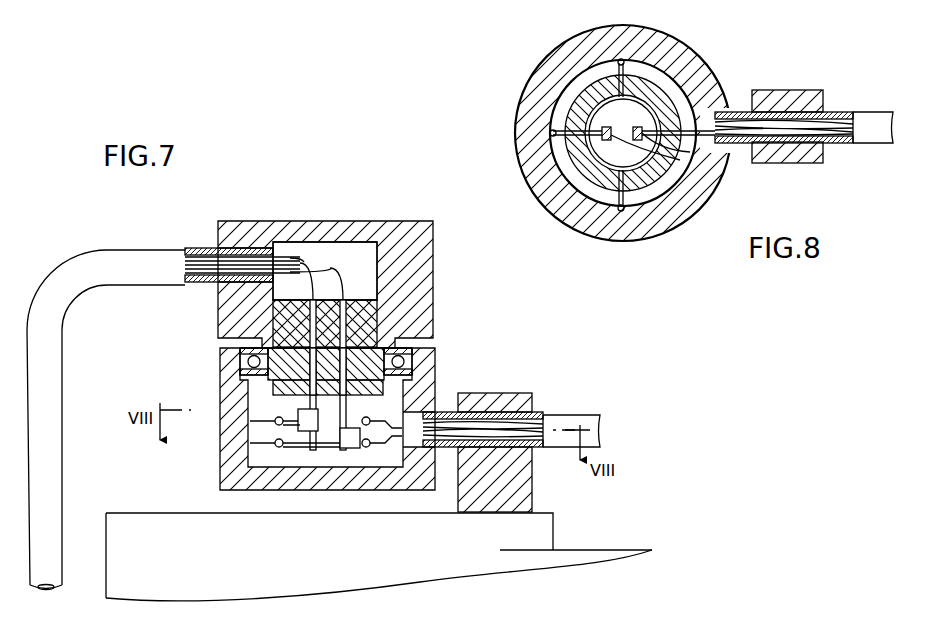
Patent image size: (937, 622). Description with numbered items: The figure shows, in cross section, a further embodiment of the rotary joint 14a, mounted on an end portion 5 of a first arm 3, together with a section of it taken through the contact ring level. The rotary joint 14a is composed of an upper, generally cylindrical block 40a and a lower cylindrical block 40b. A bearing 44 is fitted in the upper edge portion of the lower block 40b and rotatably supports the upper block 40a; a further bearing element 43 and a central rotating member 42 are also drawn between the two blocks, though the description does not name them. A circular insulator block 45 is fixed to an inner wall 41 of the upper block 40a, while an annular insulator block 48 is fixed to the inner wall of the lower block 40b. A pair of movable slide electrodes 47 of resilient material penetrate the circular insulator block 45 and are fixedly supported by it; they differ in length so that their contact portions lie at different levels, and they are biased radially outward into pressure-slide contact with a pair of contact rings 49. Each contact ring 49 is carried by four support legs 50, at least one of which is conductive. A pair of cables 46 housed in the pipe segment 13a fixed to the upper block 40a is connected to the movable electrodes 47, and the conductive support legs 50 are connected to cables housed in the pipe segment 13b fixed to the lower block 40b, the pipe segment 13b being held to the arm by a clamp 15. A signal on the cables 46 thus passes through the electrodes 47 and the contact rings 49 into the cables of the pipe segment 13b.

In FIG. 7, the first arm 3 is at (568, 550).
In FIG. 7, the end portion 5 is at (122, 545).
In FIG. 7, the pipe segment 13a is at (152, 263).
In FIG. 7, the pipe segment 13b is at (596, 437).
In FIG. 8, the pipe segment 13b is at (880, 110).
In FIG. 7, the rotary joint 14a is at (290, 208).
In FIG. 7, the clamp 15 is at (509, 394).
In FIG. 8, the clamp 15 is at (770, 90).
In FIG. 7, the upper block 40a is at (418, 221).
In FIG. 7, the lower block 40b is at (227, 486).
In FIG. 8, the lower block 40b is at (552, 197).
In FIG. 7, the inner wall 41 is at (372, 253).
In FIG. 7, the rotatable shaft 42 is at (384, 362).
In FIG. 7, the bearing 43 is at (260, 381).
In FIG. 7, the bearing 44 is at (404, 362).
In FIG. 7, the circular insulator block 45 is at (367, 291).
In FIG. 7, the cables 46 is at (344, 258).
In FIG. 7, the movable slide electrodes 47 is at (346, 452).
In FIG. 8, the movable slide electrodes 47 is at (690, 152).
In FIG. 7, the annular insulator block 48 is at (262, 435).
In FIG. 8, the annular insulator block 48 is at (556, 157).
In FIG. 7, the contact rings 49 is at (322, 448).
In FIG. 8, the contact rings 49 is at (588, 100).
In FIG. 7, the support legs 50 is at (288, 445).
In FIG. 8, the support legs 50 is at (622, 183).